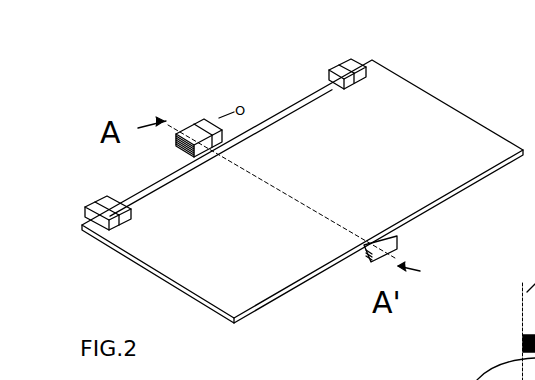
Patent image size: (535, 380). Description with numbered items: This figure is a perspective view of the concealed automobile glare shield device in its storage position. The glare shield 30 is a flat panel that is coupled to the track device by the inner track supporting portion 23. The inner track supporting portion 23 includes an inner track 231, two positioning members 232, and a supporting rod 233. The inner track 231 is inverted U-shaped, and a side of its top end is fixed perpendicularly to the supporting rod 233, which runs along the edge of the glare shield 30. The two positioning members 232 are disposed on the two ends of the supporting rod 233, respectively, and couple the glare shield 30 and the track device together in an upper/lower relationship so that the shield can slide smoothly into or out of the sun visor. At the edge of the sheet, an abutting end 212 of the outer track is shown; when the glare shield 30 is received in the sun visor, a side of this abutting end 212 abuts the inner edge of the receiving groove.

The inner track supporting portion 23 is at (217, 142).
The inner track 231 is at (181, 126).
The positioning member 232 is at (344, 50).
The supporting rod 233 is at (272, 110).
The glare shield 30 is at (468, 130).
The abutting end 212 is at (522, 340).